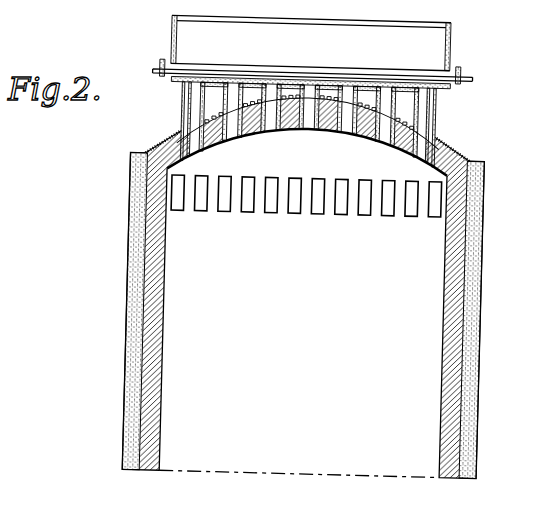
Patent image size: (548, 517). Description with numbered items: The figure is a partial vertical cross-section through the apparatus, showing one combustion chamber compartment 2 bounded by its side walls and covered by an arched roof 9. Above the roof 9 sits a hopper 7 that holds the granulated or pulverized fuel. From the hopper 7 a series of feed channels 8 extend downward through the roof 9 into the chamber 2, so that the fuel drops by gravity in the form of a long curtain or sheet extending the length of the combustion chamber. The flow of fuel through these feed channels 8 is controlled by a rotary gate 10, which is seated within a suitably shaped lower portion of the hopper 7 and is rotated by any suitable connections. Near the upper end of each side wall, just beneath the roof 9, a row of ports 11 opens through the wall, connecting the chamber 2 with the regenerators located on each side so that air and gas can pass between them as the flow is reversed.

The combustion chamber compartment 2 is at (303, 301).
The hopper 7 is at (311, 49).
The feed channels 8 is at (234, 95).
The roof 9 is at (172, 143).
The rotary gate 10 is at (343, 74).
The ports 11 is at (272, 208).